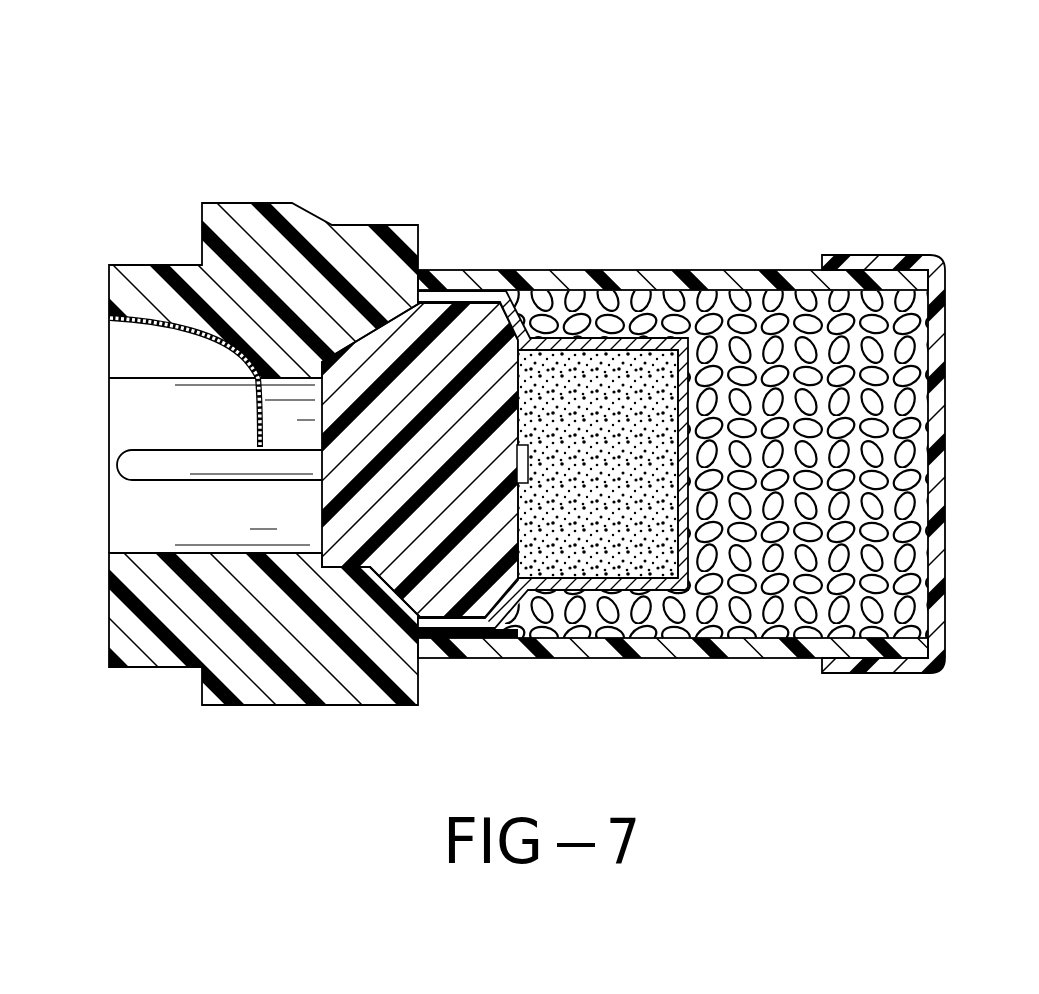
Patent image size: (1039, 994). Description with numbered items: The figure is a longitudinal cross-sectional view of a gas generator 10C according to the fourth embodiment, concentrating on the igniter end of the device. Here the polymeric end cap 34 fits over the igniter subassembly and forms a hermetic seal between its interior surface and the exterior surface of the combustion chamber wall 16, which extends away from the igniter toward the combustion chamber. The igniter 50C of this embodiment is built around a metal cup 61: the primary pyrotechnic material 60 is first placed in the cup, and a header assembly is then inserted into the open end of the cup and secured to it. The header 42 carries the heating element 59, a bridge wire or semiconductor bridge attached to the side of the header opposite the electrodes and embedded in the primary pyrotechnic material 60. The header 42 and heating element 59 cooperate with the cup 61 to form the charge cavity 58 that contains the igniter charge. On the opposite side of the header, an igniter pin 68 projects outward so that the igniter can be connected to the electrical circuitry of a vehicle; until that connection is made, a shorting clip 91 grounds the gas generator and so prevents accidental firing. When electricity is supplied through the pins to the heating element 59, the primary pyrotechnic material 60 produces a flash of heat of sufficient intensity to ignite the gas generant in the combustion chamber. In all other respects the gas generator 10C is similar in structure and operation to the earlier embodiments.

The gas generator 10C is at (519, 416).
The igniter 50C is at (398, 310).
The header 42 is at (448, 378).
The heating element 59 is at (527, 455).
The combustion chamber wall 16 is at (640, 270).
The polymeric end cap 34 is at (937, 357).
The shorting clip 91 is at (258, 412).
The igniter pin 68 is at (178, 465).
The primary pyrotechnic material 60 is at (563, 537).
The charge cavity 58 is at (603, 503).
The metal cup 61 is at (665, 583).